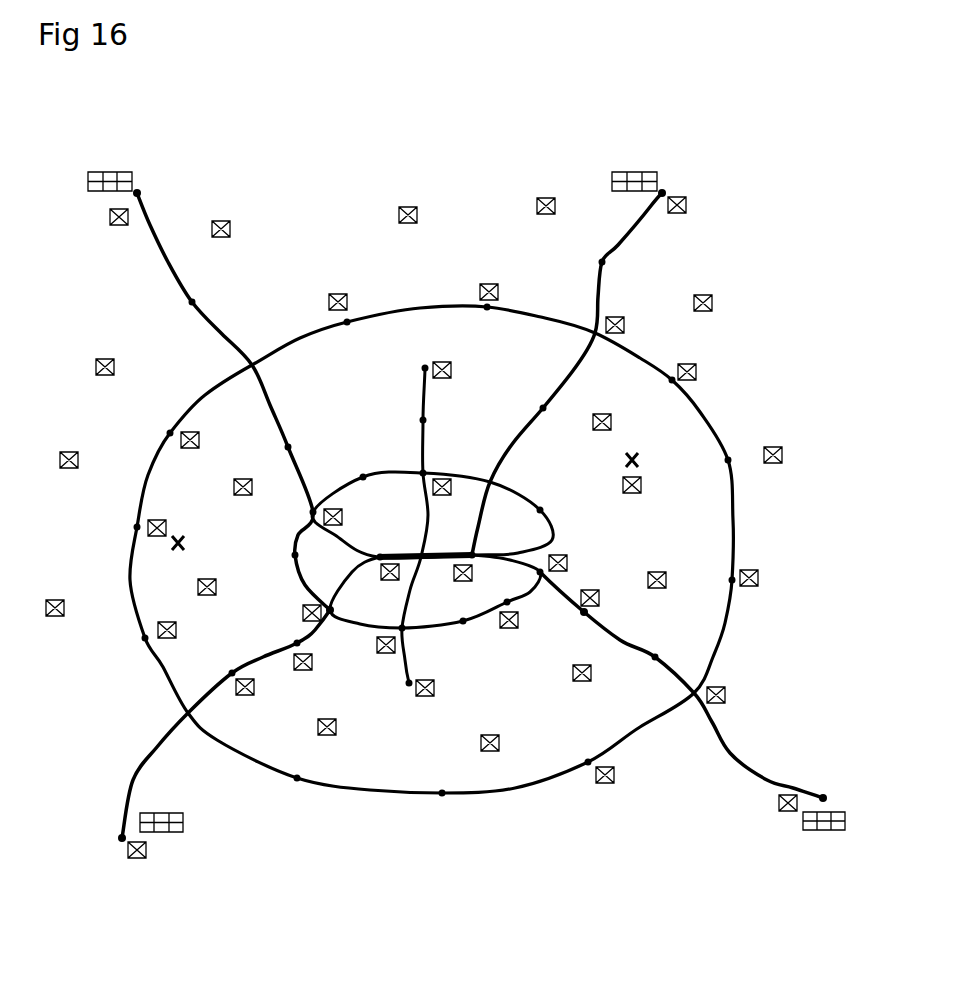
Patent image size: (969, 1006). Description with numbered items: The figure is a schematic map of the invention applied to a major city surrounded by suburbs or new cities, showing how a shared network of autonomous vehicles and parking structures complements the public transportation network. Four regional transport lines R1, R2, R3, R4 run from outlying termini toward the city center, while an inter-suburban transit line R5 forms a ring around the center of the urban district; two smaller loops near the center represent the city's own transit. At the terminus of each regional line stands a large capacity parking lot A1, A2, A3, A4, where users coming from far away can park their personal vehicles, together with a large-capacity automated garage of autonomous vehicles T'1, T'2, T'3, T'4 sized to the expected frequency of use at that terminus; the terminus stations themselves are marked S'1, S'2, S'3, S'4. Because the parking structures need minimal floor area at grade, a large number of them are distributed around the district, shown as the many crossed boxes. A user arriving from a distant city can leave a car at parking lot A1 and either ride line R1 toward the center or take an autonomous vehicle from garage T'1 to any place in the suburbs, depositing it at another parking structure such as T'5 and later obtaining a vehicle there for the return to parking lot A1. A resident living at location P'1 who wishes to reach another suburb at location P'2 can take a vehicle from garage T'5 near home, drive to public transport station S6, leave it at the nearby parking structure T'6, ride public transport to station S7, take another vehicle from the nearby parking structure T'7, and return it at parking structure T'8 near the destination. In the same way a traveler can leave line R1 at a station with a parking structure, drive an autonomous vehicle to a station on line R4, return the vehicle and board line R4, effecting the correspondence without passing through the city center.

The large capacity parking lot A1 is at (130, 172).
The large capacity parking lot A2 is at (655, 172).
The large capacity parking lot A3 is at (820, 831).
The large capacity parking lot A4 is at (185, 825).
The start node S'1 is at (178, 191).
The start node S'2 is at (714, 182).
The start node S'3 is at (845, 777).
The start node S'4 is at (85, 828).
The public transport station S6 is at (583, 614).
The public transport station S7 is at (331, 610).
The regional transport line R1 is at (167, 270).
The regional transport line R2 is at (617, 245).
The regional transport line R3 is at (730, 755).
The regional transport line R4 is at (155, 748).
The inter-suburban transit line R5 is at (130, 555).
The automated garage of autonomous vehicles T'1 is at (86, 230).
The automated garage of autonomous vehicles T'2 is at (712, 215).
The automated garage of autonomous vehicles T'3 is at (757, 814).
The automated garage of autonomous vehicles T'4 is at (103, 861).
The parking structure T'5 is at (657, 498).
The parking structure T'6 is at (622, 611).
The parking structure T'7 is at (279, 620).
The parking structure T'8 is at (181, 513).
The suburban residence location P'1 is at (648, 461).
The suburban destination location P'2 is at (194, 544).